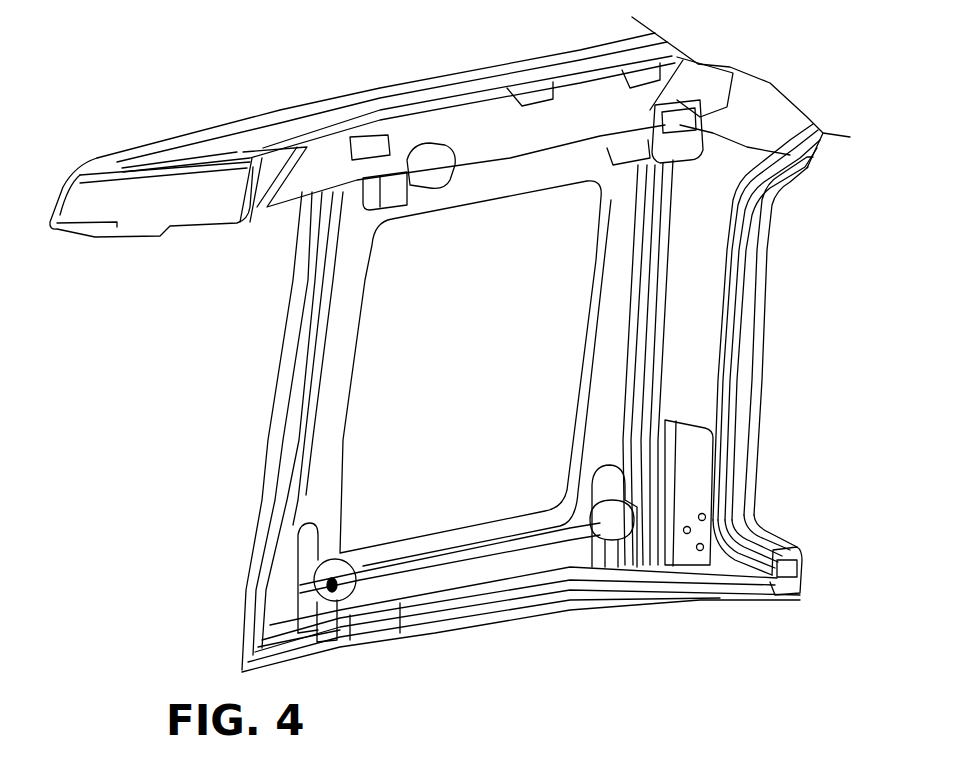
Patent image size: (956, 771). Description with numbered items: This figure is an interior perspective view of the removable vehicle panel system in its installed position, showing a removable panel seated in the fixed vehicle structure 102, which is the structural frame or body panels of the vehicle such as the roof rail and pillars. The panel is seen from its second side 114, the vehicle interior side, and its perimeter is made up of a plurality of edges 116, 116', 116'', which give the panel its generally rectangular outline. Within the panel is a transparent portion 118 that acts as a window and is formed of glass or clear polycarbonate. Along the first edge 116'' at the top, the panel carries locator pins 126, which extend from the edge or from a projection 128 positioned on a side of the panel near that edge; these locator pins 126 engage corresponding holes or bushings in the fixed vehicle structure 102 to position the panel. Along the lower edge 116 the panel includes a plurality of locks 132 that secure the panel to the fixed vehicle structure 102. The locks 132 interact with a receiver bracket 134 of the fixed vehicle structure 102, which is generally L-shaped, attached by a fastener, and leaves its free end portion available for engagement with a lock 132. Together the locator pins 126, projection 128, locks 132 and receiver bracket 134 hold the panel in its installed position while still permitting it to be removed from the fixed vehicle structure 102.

The fixed vehicle structure 102 is at (572, 62).
The second side 114 is at (332, 407).
The edge 116 is at (521, 609).
The edge 116' is at (261, 431).
The first edge 116'' is at (454, 188).
The transparent portion 118 is at (447, 383).
The locator pin 126 is at (425, 160).
The projection 128 is at (680, 152).
The lock 132 is at (296, 609).
The receiver bracket 134 is at (590, 577).